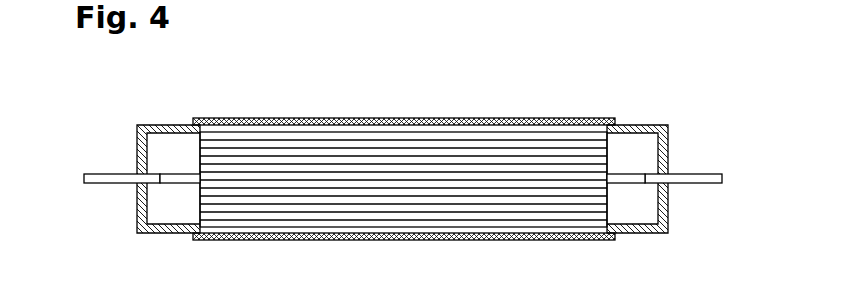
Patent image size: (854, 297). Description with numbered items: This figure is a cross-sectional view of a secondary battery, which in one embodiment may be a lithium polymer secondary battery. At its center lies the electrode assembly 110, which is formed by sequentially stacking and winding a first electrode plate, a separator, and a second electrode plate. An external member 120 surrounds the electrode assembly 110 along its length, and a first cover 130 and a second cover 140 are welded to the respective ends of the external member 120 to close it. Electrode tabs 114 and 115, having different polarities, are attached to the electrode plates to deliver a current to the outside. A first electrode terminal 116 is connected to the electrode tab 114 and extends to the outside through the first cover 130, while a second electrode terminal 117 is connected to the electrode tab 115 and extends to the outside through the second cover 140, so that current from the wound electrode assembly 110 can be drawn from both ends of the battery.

The electrode assembly 110 is at (413, 140).
The electrode tab 114 is at (632, 183).
The electrode tab 115 is at (177, 183).
The first electrode terminal 116 is at (707, 174).
The second electrode terminal 117 is at (95, 174).
The external member 120 is at (536, 119).
The first cover 130 is at (650, 128).
The second cover 140 is at (158, 124).